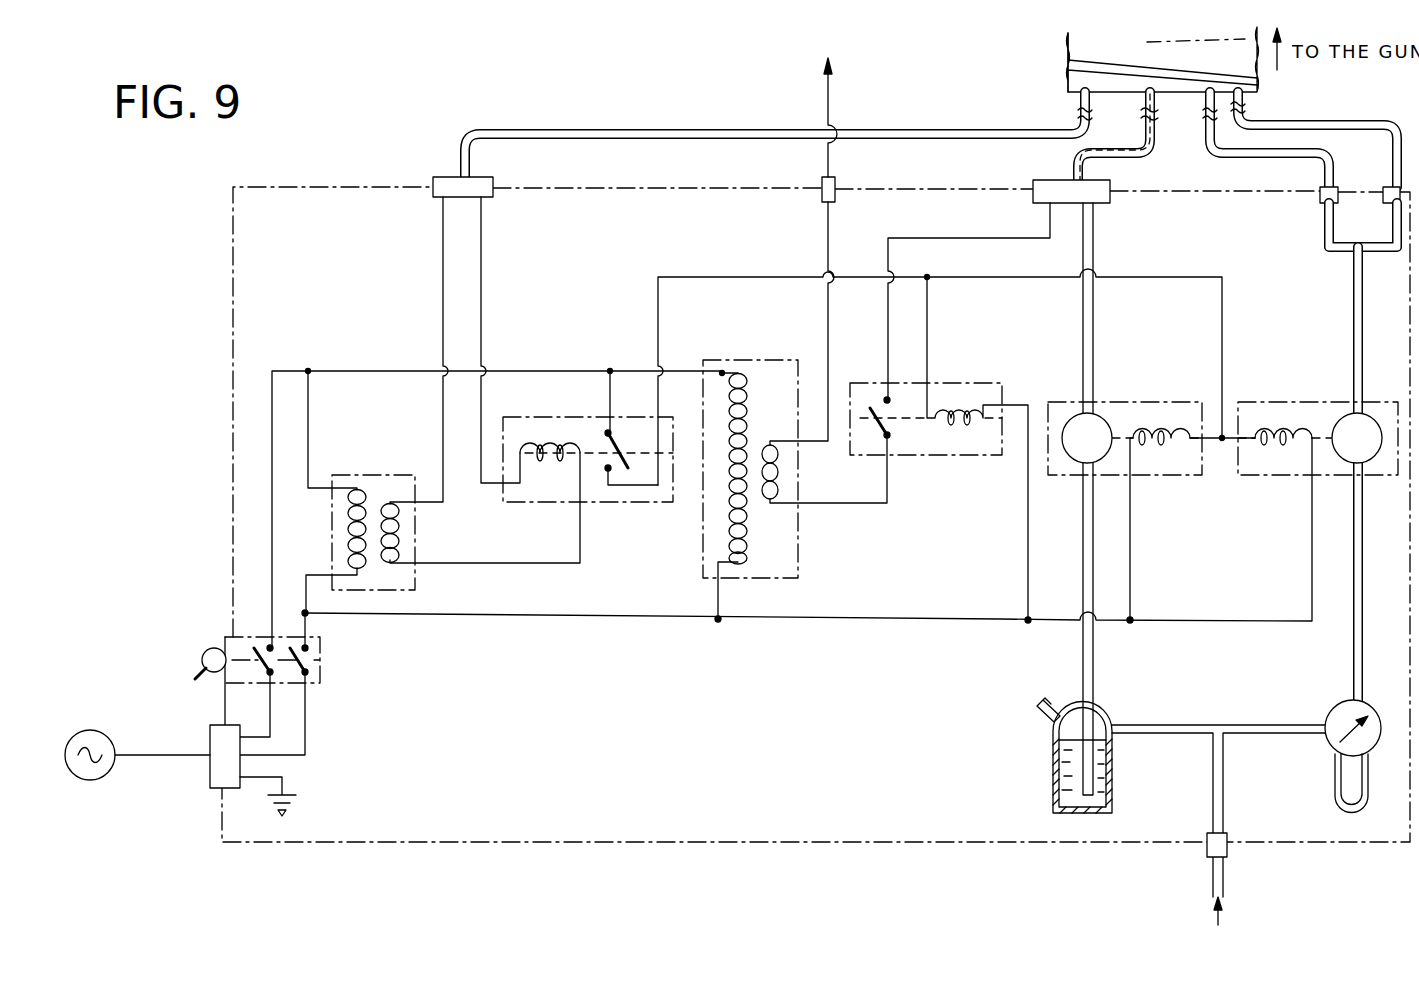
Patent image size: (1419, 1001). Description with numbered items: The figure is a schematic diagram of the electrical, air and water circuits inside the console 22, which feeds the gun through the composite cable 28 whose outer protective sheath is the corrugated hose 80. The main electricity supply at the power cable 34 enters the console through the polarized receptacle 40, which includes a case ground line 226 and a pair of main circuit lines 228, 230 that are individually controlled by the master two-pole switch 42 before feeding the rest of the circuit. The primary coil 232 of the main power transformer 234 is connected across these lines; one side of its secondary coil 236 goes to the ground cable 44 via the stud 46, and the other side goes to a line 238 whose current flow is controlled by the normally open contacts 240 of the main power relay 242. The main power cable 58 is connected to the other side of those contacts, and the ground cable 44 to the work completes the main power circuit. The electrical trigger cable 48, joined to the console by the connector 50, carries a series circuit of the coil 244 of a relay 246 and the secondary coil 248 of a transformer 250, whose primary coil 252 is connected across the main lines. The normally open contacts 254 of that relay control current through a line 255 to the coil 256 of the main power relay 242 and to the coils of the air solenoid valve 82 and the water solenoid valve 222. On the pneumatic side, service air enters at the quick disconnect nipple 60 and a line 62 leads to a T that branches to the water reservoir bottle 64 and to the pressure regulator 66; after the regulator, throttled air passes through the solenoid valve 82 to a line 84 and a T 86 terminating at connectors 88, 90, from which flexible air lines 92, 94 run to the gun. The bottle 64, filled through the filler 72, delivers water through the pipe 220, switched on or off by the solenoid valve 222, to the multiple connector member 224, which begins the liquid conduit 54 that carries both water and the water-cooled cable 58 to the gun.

The console 22 is at (196, 223).
The composite cable 28 is at (1045, 82).
The hose 80 is at (1067, 60).
The power cable 34 is at (167, 763).
The receptacle 40 is at (210, 742).
The master on/off switch 42 is at (322, 678).
The ground cable 44 is at (827, 112).
The stud 46 is at (822, 174).
The electrical trigger cable 48 is at (524, 128).
The connector 50 is at (441, 178).
The liquid conduit 54 is at (1072, 154).
The main power cable 58 is at (1158, 149).
The quick disconnect nipple 60 is at (1206, 840).
The line 62 is at (1212, 776).
The water reservoir bottle 64 is at (1040, 767).
The pressure regulator 66 is at (1334, 779).
The filler 72 is at (1036, 712).
The solenoid operated valve 82 is at (1290, 478).
The line 84 is at (1353, 335).
The T 86 is at (1340, 256).
The connector 88 is at (1319, 204).
The connector 90 is at (1392, 178).
The flexible air line 92 is at (1306, 162).
The flexible air line 94 is at (1340, 129).
The pipe 220 is at (1095, 320).
The solenoid valve 222 is at (1196, 478).
The multiple connector member 224 is at (1112, 200).
The case ground line 226 is at (282, 780).
The main circuit line 228 is at (362, 371).
The main circuit line 230 is at (325, 616).
The primary coil 232 is at (748, 346).
The main power transformer 234 is at (800, 568).
The secondary coil 236 is at (778, 478).
The line 238 is at (882, 507).
The normally open contacts 240 is at (872, 404).
The main power relay 242 is at (940, 458).
The coil 244 is at (556, 455).
The relay 246 is at (622, 502).
The secondary coil 248 is at (400, 542).
The transformer 250 is at (345, 475).
The primary coil 252 is at (353, 530).
The normally open contacts 254 is at (597, 436).
The line 255 is at (656, 322).
The coil 256 is at (970, 400).